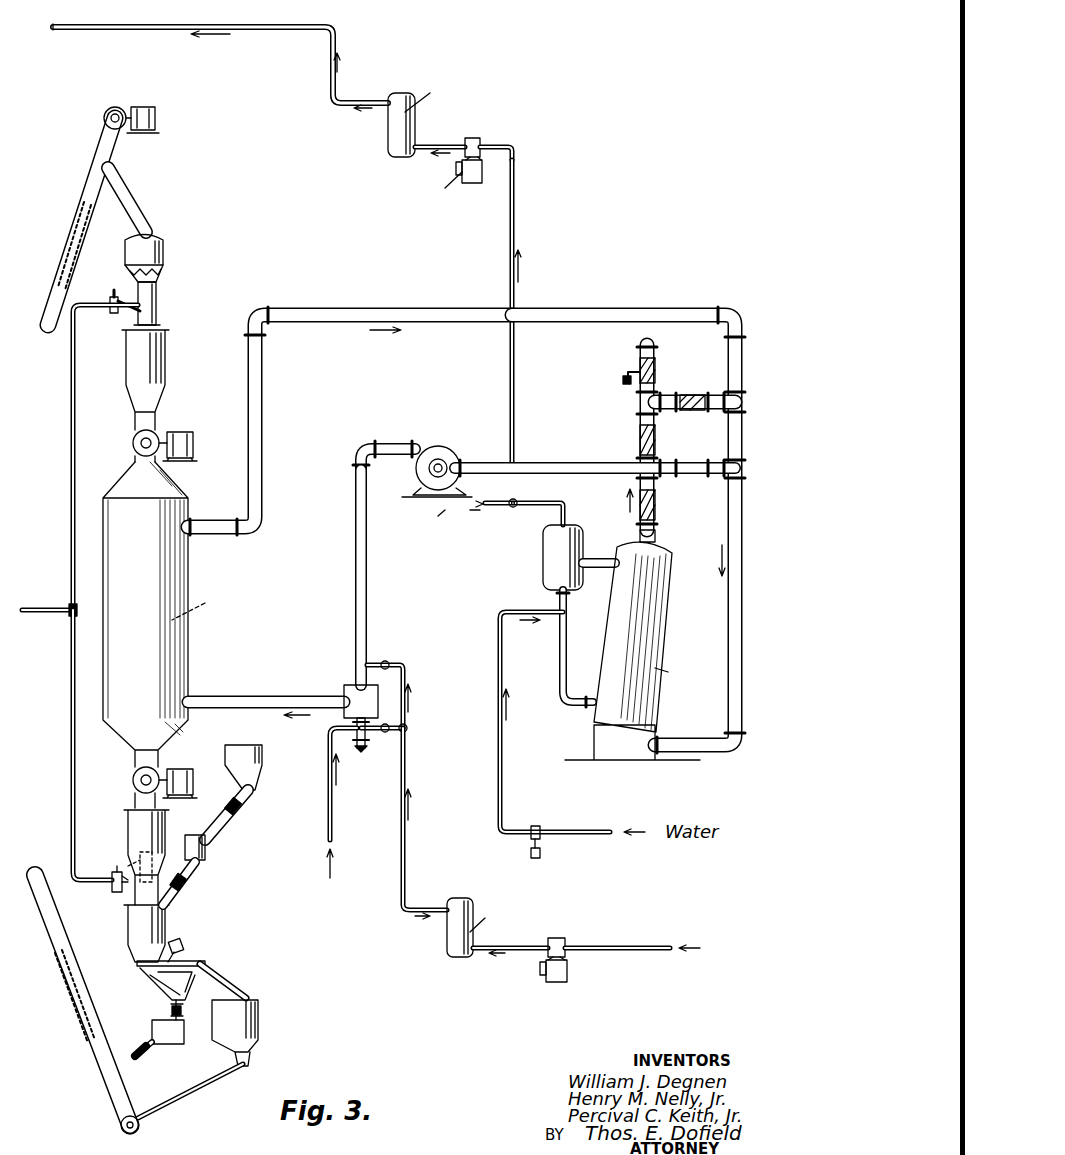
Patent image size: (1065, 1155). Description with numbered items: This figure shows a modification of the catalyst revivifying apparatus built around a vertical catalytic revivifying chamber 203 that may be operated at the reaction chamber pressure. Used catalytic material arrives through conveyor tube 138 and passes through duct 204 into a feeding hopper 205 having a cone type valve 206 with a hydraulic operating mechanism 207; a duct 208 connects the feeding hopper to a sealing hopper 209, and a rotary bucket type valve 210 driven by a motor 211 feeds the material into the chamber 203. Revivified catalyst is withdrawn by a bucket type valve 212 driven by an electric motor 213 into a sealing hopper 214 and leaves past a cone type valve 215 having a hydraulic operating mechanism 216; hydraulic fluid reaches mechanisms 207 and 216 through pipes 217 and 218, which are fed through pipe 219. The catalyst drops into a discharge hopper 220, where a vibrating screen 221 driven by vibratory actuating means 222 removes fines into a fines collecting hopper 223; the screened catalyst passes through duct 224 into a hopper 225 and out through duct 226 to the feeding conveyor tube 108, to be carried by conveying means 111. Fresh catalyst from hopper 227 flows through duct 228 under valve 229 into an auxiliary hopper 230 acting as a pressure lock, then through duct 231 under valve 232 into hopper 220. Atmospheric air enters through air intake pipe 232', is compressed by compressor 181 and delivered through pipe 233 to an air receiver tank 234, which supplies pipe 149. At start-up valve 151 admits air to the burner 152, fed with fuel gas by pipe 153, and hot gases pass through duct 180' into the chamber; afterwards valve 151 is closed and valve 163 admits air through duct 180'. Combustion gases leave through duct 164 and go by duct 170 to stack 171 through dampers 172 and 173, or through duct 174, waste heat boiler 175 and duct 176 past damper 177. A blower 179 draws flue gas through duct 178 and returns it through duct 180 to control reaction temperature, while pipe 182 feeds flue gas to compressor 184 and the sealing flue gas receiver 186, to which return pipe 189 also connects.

The flue gas return pipe 189 is at (262, 27).
The conveyor tube 138 is at (84, 196).
The duct 204 is at (126, 200).
The feeding hopper 205 is at (163, 250).
The cone type valve 206 is at (160, 276).
The duct 208 is at (158, 307).
The hydraulic operating mechanism 207 is at (122, 315).
The sealing hopper 209 is at (165, 370).
The rotary bucket type valve 210 is at (133, 445).
The motor 211 is at (190, 440).
The catalytic revivifying chamber 203 is at (183, 655).
The duct 180' is at (266, 691).
The pipe 217 is at (71, 440).
The pipe 219 is at (40, 615).
The pipe 218 is at (71, 707).
The hydraulic operating mechanism 216 is at (118, 893).
The bucket type valve 212 is at (133, 785).
The electric motor 213 is at (180, 769).
The sealing hopper 214 is at (128, 826).
The cone type valve 215 is at (119, 867).
The discharge hopper 220 is at (165, 925).
The vibrating screen 221 is at (152, 988).
The vibratory actuating means 222 is at (184, 952).
The duct 224 is at (228, 982).
The hopper 225 is at (258, 1020).
The fines collecting hopper 223 is at (165, 1045).
The duct 226 is at (185, 1080).
The feeding conveyor tube 108 is at (100, 1070).
The conveying means 111 is at (72, 1018).
The hopper 227 is at (263, 755).
The duct 228 is at (212, 828).
The valve 229 is at (239, 804).
The auxiliary hopper 230 is at (206, 848).
The duct 231 is at (183, 890).
The valve 232 is at (207, 877).
The sealing flue gas receiver 186 is at (392, 125).
The compressor 184 is at (482, 140).
The pipe 182 is at (514, 368).
The duct 164 is at (258, 490).
The duct 174 is at (742, 598).
The stack 171 is at (656, 355).
The damper 173 is at (656, 370).
The duct 170 is at (685, 395).
The damper 172 is at (685, 412).
The damper 177 is at (638, 437).
The duct 178 is at (545, 462).
The blower 179 is at (452, 452).
The duct 176 is at (656, 515).
The waste heat boiler 175 is at (664, 600).
The duct 180 is at (379, 594).
The valve 163 is at (389, 663).
The valve 151 is at (386, 734).
The burner 152 is at (358, 754).
The pipe 153 is at (333, 805).
The pipe 149 is at (406, 850).
The air receiver tank 234 is at (450, 940).
The pipe 233 is at (528, 950).
The air compressor 181 is at (556, 983).
The air intake pipe 232' is at (656, 953).